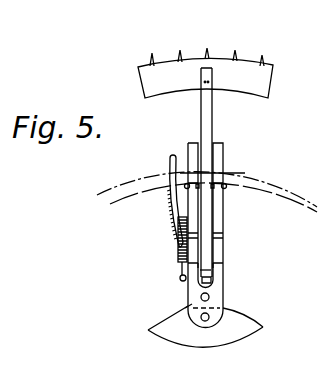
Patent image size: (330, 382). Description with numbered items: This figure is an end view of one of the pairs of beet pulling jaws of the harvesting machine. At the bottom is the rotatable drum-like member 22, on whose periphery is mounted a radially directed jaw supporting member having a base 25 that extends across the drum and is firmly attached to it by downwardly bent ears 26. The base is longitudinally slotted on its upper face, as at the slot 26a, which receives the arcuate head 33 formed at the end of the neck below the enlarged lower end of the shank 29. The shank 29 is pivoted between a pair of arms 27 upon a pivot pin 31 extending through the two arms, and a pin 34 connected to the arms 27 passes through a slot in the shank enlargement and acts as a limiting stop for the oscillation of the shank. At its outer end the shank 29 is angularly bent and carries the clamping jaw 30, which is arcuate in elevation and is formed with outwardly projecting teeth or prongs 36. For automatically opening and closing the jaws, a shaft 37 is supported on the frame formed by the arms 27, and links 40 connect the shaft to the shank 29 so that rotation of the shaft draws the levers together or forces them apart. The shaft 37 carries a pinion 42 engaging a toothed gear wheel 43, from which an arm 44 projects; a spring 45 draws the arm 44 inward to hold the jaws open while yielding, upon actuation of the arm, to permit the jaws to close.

The rotatable drum-like member 22 is at (233, 333).
The base 25 is at (200, 298).
The downwardly bent ears 26 is at (222, 311).
The slot 26a is at (214, 302).
The arms 27 is at (190, 207).
The shank 29 is at (212, 131).
The clamping jaw 30 is at (265, 84).
The pivot pin 31 is at (240, 173).
The arcuate head 33 is at (193, 305).
The pin 34 is at (211, 290).
The teeth or prongs 36 is at (233, 58).
The shaft 37 is at (212, 278).
The links 40 is at (300, 193).
The pinion 42 is at (180, 270).
The toothed gear wheel 43 is at (177, 241).
The arm 44 is at (170, 168).
The spring 45 is at (172, 199).